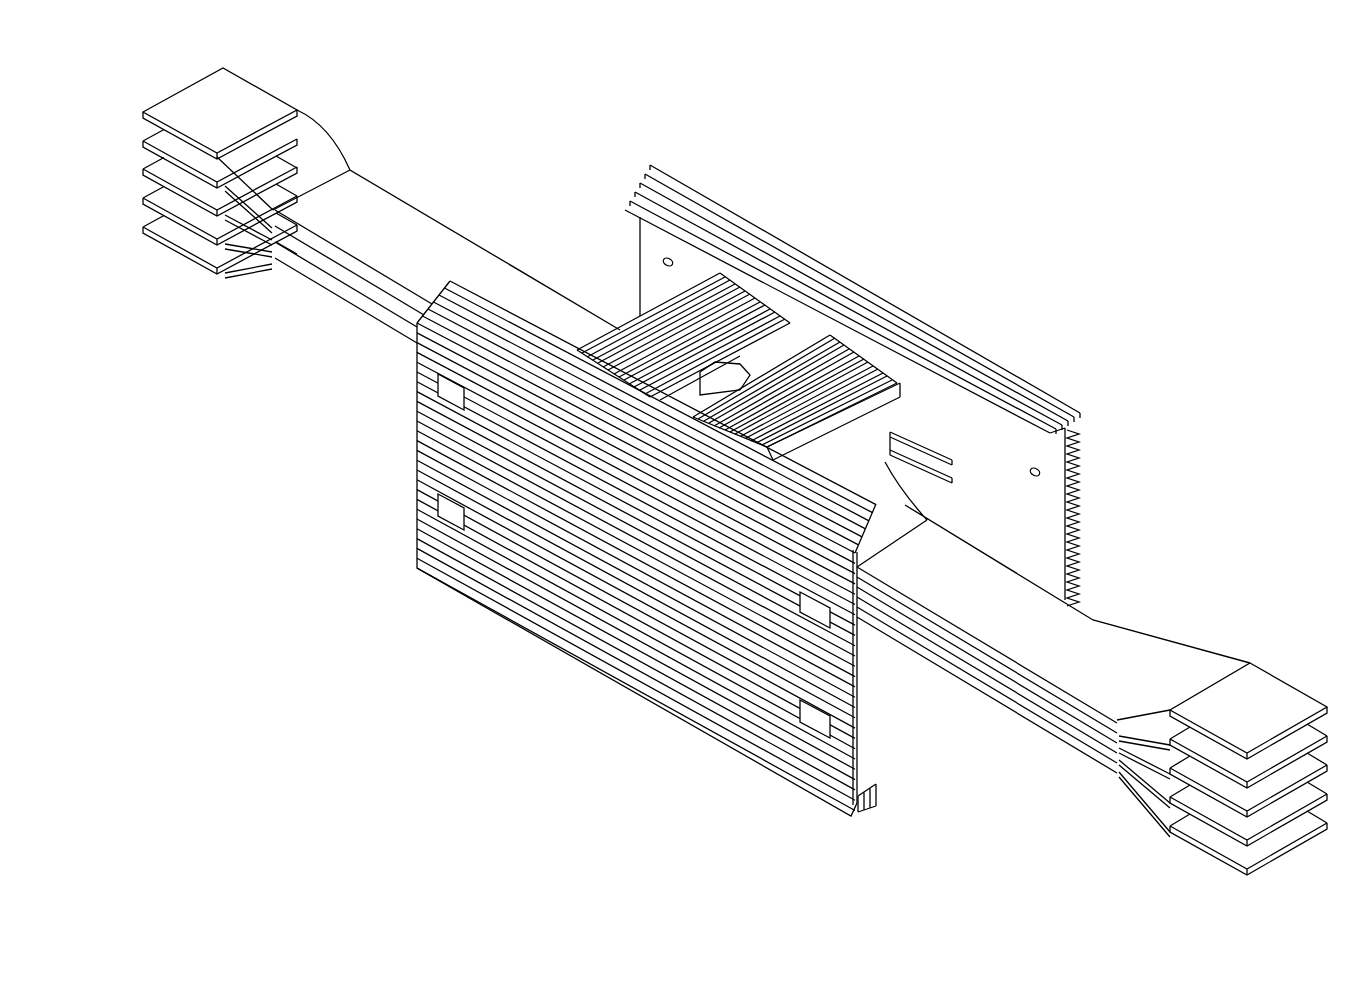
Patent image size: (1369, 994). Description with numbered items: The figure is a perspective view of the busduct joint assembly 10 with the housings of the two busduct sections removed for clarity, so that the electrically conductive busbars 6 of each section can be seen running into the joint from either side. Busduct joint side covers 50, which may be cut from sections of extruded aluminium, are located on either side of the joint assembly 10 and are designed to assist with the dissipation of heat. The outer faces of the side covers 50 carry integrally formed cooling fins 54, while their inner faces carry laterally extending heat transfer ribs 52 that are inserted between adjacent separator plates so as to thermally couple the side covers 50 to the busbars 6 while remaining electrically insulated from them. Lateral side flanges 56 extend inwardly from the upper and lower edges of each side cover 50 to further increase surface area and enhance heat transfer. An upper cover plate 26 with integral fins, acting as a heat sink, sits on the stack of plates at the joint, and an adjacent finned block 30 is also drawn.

The busduct joint assembly 10 is at (535, 732).
The busbars 6 is at (188, 242).
The upper cover plate 26 is at (783, 325).
The second fin block 30 is at (830, 340).
The busduct joint side covers 50 is at (1082, 557).
The heat transfer ribs 52 is at (920, 460).
The cooling fins 54 is at (498, 566).
The lateral side flanges 56 is at (873, 780).